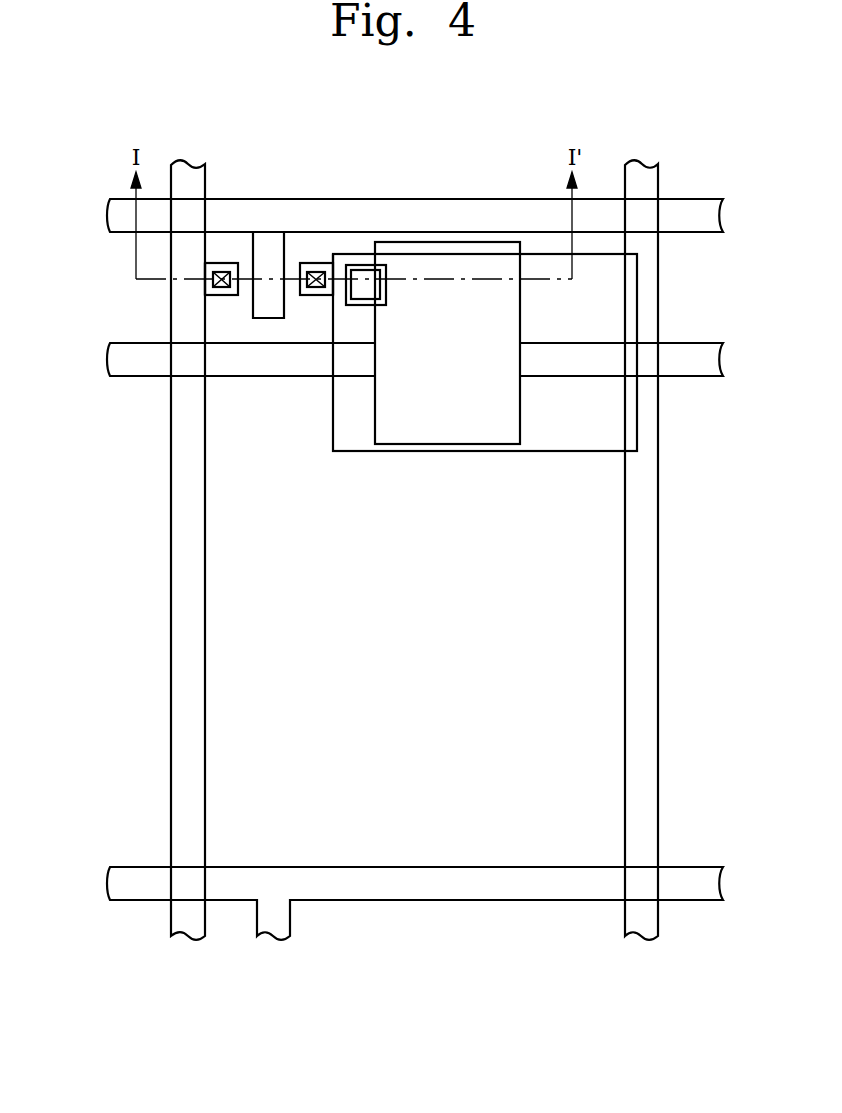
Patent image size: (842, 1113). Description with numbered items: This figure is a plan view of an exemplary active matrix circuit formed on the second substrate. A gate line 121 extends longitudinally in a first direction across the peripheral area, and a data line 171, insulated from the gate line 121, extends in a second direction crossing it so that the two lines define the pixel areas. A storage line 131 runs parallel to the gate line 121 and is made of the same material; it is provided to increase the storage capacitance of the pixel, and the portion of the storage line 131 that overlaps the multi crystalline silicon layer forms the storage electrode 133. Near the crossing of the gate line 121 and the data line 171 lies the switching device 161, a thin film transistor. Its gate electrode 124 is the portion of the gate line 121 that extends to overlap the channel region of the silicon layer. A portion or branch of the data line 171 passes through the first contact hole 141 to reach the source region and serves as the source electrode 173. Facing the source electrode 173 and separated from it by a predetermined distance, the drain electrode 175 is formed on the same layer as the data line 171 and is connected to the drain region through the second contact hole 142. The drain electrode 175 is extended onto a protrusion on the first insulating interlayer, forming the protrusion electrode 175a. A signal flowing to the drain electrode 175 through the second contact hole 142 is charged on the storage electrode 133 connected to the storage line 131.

The gate line 121 is at (450, 199).
The gate electrode 124 is at (268, 318).
The storage line 131 is at (108, 358).
The storage electrode 133 is at (445, 448).
The first contact hole 141 is at (218, 264).
The second contact hole 142 is at (310, 264).
The switching device 161 is at (375, 543).
The data line 171 is at (171, 578).
The source electrode 173 is at (219, 295).
The drain electrode 175 is at (310, 295).
The protrusion electrode 175a is at (365, 270).